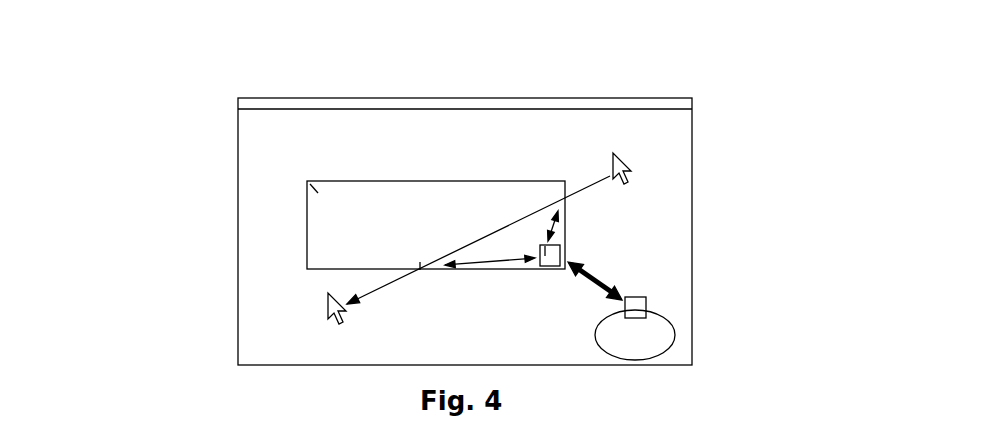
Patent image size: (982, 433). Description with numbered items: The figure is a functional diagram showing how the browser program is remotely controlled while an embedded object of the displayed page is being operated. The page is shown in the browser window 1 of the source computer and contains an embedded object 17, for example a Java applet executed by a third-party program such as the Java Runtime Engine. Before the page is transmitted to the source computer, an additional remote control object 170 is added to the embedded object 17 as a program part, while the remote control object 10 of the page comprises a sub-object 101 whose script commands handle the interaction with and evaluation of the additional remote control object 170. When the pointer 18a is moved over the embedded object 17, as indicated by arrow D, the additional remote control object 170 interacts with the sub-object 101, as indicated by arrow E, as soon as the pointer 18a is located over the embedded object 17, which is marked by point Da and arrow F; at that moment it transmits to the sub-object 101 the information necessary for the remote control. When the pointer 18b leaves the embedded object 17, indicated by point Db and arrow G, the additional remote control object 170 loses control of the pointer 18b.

The browser window 1 is at (218, 132).
The embedded object 17 is at (318, 193).
The arrow D is at (420, 270).
The pointer 18a is at (627, 167).
The pointer 18b is at (328, 305).
The point Da is at (560, 245).
The point Db is at (420, 268).
The arrow G is at (500, 258).
The additional remote control object 170 is at (546, 244).
The arrow F is at (558, 210).
The arrow E is at (570, 263).
The sub-object 101 is at (646, 307).
The remote control object 10 is at (647, 343).